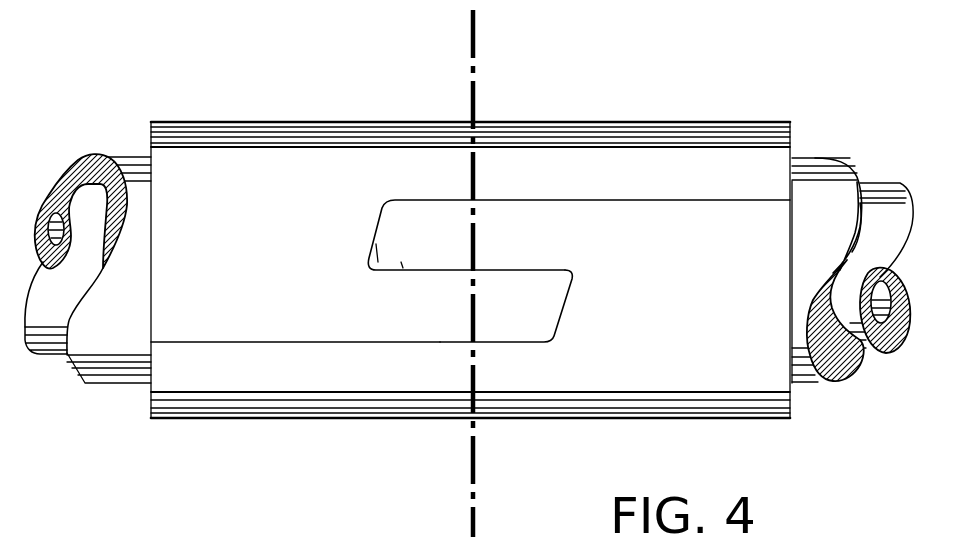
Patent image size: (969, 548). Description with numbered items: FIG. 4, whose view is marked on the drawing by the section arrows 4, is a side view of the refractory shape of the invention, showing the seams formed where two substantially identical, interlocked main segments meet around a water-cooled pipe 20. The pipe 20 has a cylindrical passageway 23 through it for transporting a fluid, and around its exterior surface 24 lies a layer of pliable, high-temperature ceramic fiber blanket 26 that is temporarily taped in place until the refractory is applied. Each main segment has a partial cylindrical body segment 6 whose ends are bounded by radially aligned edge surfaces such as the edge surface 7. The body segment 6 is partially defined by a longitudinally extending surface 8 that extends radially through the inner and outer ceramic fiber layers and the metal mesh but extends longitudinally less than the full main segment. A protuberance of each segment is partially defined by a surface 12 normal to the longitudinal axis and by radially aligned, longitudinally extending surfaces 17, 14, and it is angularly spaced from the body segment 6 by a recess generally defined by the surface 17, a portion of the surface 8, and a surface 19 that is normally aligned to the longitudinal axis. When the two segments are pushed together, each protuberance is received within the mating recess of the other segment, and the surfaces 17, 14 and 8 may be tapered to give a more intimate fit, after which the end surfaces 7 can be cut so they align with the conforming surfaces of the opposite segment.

The section line 4- 4 is at (473, 35).
The partial cylindrical body segment 6 is at (724, 137).
The radially aligned edge surface 7 is at (790, 145).
The longitudinally extending surface 8 is at (636, 197).
The surface normal to the longitudinal axis 12 is at (567, 320).
The radially aligned longitudinally extending surface 14 is at (434, 350).
The radially aligned longitudinally extending surface 17 is at (401, 262).
The recess surface 19 is at (376, 244).
The water-cooled pipe 20 is at (864, 370).
The cylindrical passageway 23 is at (34, 210).
The exterior surface 24 is at (52, 356).
The ceramic fiber blanket 26 is at (70, 166).